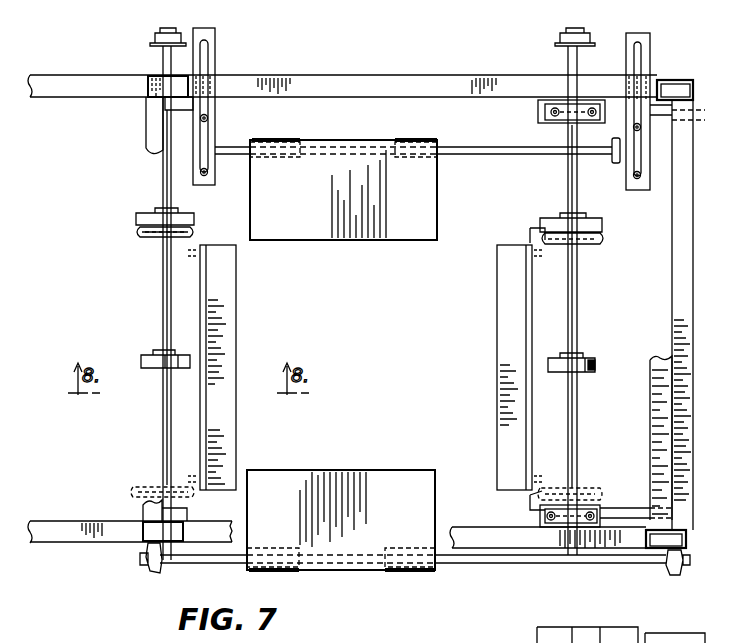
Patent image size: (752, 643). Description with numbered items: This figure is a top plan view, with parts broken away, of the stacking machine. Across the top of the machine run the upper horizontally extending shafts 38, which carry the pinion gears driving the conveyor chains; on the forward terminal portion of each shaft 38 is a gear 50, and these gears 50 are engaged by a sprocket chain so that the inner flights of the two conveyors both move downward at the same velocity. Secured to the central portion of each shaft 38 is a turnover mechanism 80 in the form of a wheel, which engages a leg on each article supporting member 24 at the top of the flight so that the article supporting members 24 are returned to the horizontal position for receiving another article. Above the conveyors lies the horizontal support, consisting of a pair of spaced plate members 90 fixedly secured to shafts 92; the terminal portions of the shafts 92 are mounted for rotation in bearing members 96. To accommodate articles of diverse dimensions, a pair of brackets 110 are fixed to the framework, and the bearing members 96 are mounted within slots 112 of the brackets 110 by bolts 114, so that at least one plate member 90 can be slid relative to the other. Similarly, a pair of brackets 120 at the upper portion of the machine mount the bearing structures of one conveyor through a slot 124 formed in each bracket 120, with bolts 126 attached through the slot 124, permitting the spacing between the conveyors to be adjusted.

The article supporting member 24 is at (236, 283).
The upper horizontally extending shaft 38 is at (162, 286).
The gear 50 is at (154, 38).
The turnover mechanism 80 is at (150, 352).
The plate member 90 is at (350, 191).
The shaft 92 is at (466, 132).
The bearing member 96 is at (210, 133).
The bracket 110 is at (215, 40).
The slot 112 is at (208, 60).
The bolt 114 is at (205, 177).
The bracket 120 is at (695, 103).
The slot 124 is at (696, 118).
The bolt 126 is at (538, 115).